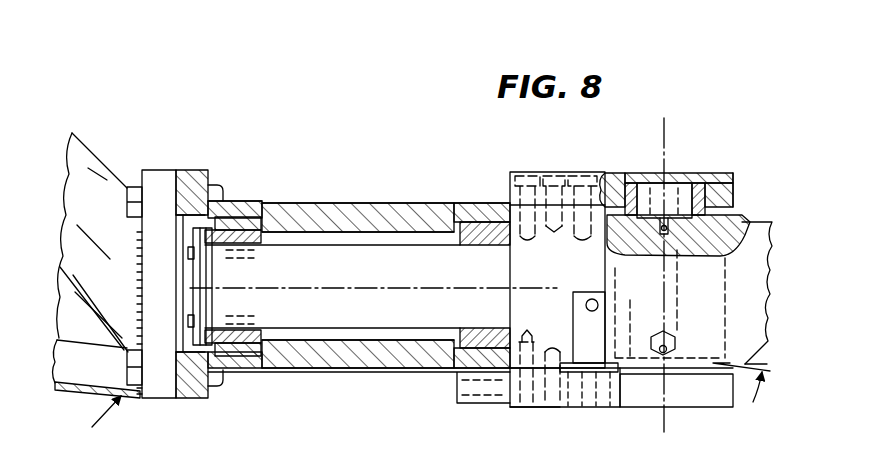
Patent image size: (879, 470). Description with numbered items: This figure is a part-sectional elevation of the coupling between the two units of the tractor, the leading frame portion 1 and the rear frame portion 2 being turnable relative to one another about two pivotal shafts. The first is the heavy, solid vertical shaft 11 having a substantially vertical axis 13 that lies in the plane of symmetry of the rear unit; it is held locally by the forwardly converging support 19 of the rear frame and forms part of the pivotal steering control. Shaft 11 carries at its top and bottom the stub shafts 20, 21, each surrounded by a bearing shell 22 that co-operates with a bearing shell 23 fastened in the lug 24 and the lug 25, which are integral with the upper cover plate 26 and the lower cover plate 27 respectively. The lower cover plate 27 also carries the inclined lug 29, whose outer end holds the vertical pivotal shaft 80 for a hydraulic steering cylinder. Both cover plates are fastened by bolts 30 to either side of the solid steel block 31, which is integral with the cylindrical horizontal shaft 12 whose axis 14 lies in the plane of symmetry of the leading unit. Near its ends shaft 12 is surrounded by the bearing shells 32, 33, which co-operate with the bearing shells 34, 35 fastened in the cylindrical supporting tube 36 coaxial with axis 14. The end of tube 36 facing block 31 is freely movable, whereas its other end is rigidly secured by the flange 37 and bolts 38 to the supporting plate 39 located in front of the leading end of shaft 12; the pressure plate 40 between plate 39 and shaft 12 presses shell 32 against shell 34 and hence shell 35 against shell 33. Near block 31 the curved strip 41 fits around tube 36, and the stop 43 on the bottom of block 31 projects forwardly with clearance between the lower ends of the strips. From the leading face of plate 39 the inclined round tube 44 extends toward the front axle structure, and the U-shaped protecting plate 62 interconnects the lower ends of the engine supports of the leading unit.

The leading frame portion 1 is at (100, 419).
The rear frame portion 2 is at (752, 399).
The vertical shaft 11 is at (707, 305).
The horizontal shaft 12 is at (330, 323).
The axis 13 is at (664, 128).
The axis 14 is at (346, 289).
The support 19 is at (766, 222).
The stub shaft 20 is at (701, 182).
The stub shaft 21 is at (652, 396).
The bearing shell 22 is at (737, 190).
The bearing shell 23 is at (630, 182).
The lug 24 is at (674, 182).
The lug 25 is at (727, 404).
The upper cover plate 26 is at (602, 176).
The lower cover plate 27 is at (538, 408).
The lug 29 is at (607, 403).
The bolts 30 is at (591, 172).
The block 31 is at (522, 299).
The bearing shell 32 is at (240, 212).
The bearing shell 33 is at (478, 246).
The bearing shell 34 is at (274, 212).
The bearing shell 35 is at (483, 215).
The supporting tube 36 is at (337, 204).
The flange 37 is at (212, 196).
The bolts 38 is at (126, 209).
The supporting plate 39 is at (161, 178).
The pressure plate 40 is at (195, 276).
The curved strip 41 is at (490, 373).
The stop 43 is at (463, 388).
The round tube 44 is at (93, 162).
The protecting plate 62 is at (97, 396).
The pivotal shaft 80 is at (586, 291).